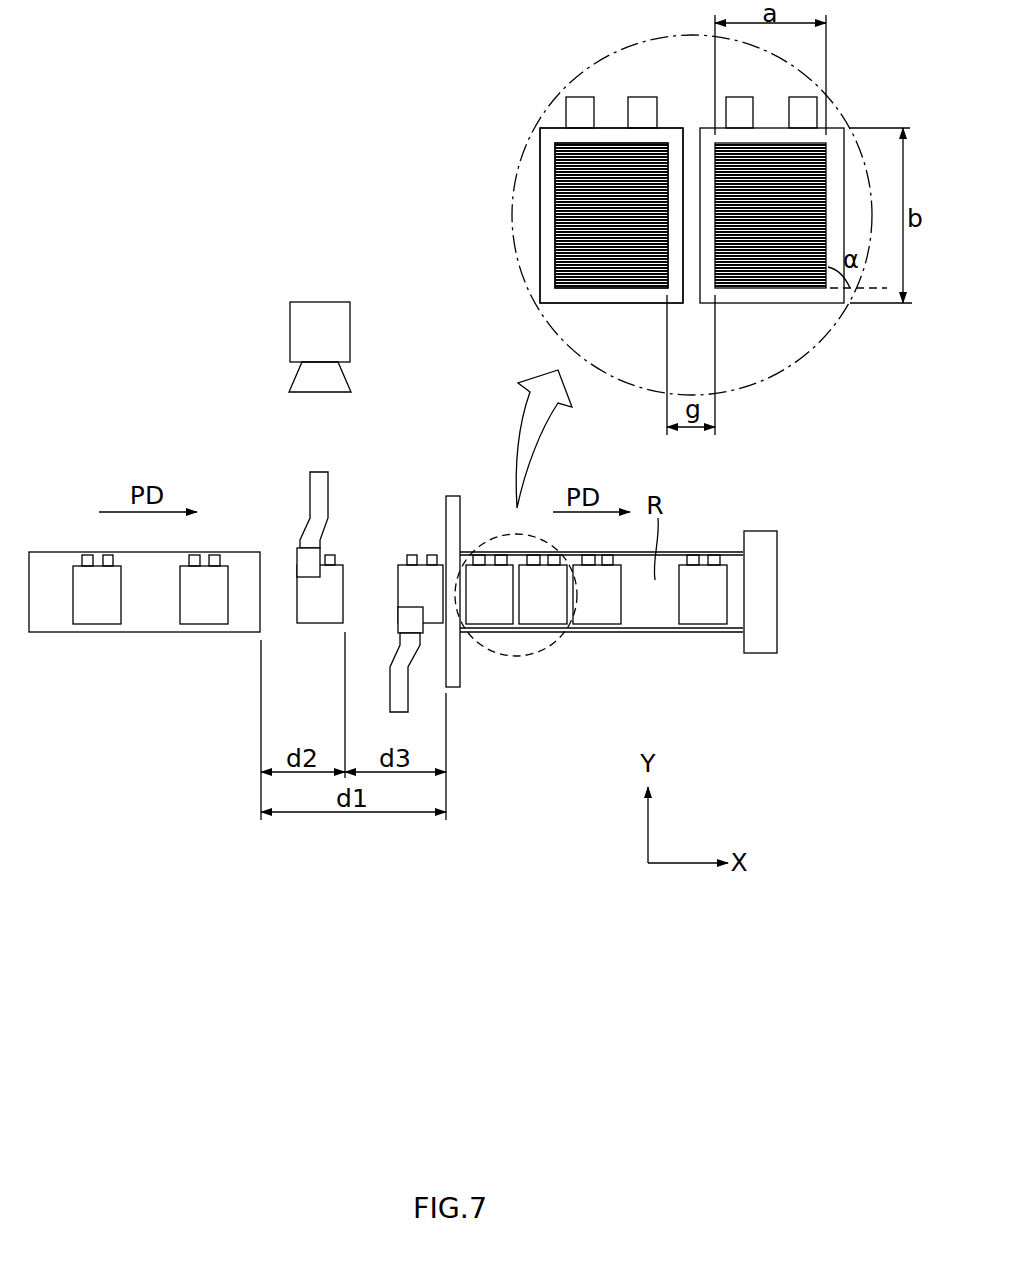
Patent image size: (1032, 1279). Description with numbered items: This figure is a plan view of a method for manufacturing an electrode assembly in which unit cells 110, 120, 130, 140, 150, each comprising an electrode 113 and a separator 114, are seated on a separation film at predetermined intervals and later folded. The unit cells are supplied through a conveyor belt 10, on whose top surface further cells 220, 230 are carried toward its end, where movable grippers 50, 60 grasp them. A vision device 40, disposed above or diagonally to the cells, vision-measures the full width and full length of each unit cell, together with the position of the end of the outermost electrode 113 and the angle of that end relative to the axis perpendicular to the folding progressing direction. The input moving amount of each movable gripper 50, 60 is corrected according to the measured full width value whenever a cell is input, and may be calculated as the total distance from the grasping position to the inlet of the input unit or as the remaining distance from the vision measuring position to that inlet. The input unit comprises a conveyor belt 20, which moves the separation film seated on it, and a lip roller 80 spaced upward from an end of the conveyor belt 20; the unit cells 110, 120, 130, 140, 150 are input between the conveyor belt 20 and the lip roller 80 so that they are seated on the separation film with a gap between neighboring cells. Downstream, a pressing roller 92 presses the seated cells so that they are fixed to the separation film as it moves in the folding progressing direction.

The conveyor belt 10 is at (56, 538).
The conveyor belt 20 is at (698, 537).
The vision device 40 is at (350, 330).
The movable gripper 50 is at (392, 687).
The movable gripper 60 is at (310, 490).
The lip roller 80 is at (467, 692).
The pressing roller 92 is at (778, 590).
The unit cell 110 is at (703, 610).
The electrode 113 is at (577, 215).
The separator 114 is at (543, 173).
The unit cell 120 is at (597, 610).
The unit cell 130 is at (770, 288).
The unit cell 140 is at (610, 288).
The unit cell 150 is at (407, 580).
The battery cell on first conveyor 220 is at (204, 610).
The battery cell on first conveyor 230 is at (97, 610).